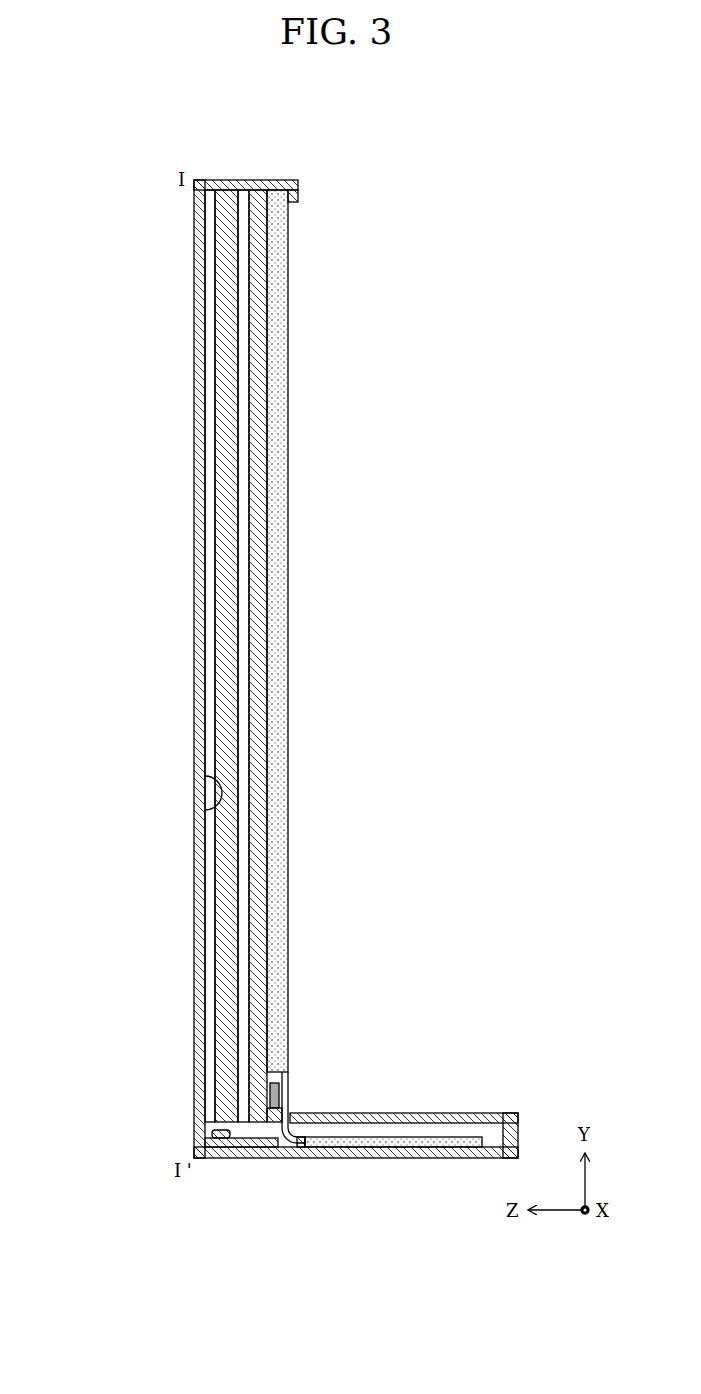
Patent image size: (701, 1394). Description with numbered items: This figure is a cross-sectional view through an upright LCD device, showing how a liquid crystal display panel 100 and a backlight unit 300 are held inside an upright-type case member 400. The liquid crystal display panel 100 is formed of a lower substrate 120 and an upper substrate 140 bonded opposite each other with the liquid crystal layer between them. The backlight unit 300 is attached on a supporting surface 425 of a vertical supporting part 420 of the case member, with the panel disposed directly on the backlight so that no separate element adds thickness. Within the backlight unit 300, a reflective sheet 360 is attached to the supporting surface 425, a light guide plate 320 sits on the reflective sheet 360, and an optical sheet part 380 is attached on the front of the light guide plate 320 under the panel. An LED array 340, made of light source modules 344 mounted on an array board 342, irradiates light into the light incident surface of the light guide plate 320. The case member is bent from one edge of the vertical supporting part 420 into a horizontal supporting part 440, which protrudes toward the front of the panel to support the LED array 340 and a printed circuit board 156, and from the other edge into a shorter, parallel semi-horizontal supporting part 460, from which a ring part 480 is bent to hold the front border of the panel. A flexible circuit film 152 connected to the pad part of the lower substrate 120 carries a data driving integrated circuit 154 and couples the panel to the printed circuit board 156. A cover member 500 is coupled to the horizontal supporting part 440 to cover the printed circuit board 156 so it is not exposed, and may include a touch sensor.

The liquid crystal display panel 100 is at (326, 656).
The lower substrate 120 is at (258, 762).
The upper substrate 140 is at (278, 828).
The flexible circuit film 152 is at (285, 1147).
The data driving integrated circuit 154 is at (305, 1140).
The printed circuit board 156 is at (372, 1143).
The backlight unit 300 is at (160, 671).
The light guide plate 320 is at (226, 1052).
The LED array 340 is at (184, 1131).
The array board 342 is at (215, 1143).
The light source module 344 is at (220, 1133).
The reflective sheet 360 is at (210, 1080).
The optical sheet part 380 is at (245, 1025).
The upright-type case member 400 is at (283, 667).
The vertical supporting part 420 is at (204, 702).
The supporting surface 425 is at (204, 810).
The horizontal supporting part 440 is at (428, 1152).
The semi-horizontal supporting part 460 is at (239, 180).
The ring part 480 is at (299, 193).
The cover member 500 is at (417, 1113).